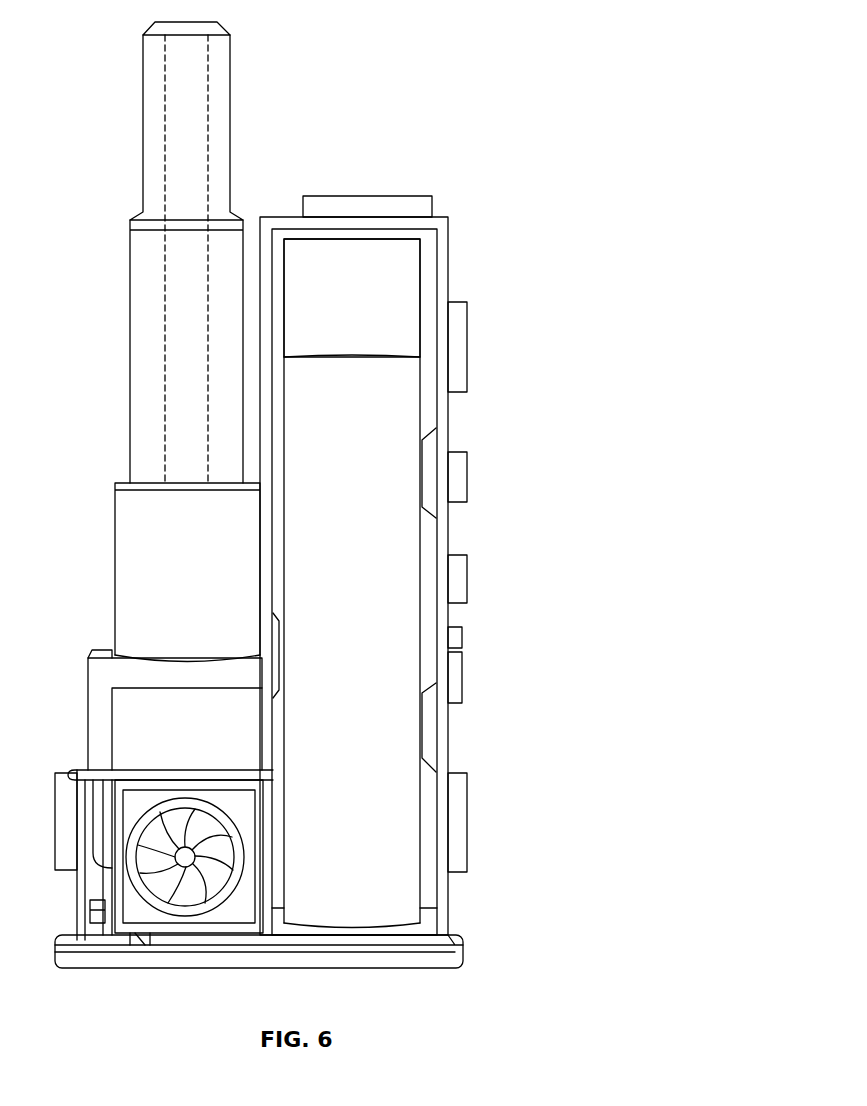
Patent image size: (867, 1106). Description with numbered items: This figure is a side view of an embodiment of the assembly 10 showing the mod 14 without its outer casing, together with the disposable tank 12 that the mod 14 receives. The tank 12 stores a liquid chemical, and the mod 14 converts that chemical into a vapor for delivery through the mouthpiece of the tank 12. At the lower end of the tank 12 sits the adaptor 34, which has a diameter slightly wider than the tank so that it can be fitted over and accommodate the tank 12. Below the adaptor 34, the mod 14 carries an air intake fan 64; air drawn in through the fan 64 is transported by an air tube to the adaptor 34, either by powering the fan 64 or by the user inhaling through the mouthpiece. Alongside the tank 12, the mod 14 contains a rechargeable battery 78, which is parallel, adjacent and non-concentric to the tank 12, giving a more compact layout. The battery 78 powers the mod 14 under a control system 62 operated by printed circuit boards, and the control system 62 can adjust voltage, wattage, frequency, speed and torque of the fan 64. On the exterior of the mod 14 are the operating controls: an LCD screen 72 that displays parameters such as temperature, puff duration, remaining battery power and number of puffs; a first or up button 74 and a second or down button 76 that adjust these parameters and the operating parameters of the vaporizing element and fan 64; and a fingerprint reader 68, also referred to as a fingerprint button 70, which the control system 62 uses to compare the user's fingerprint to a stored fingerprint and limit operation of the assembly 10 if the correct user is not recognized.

The assembly 10 is at (447, 126).
The disposable tank 12 is at (143, 294).
The mod 14 is at (430, 737).
The adaptor 34 is at (115, 560).
The control system 62 is at (402, 285).
The air intake fan 64 is at (140, 888).
The fingerprint reader 68 is at (455, 824).
The fingerprint button 70 is at (456, 352).
The LCD screen 72 is at (373, 196).
The first button 74 is at (456, 467).
The second button 76 is at (456, 588).
The rechargeable battery 78 is at (380, 908).